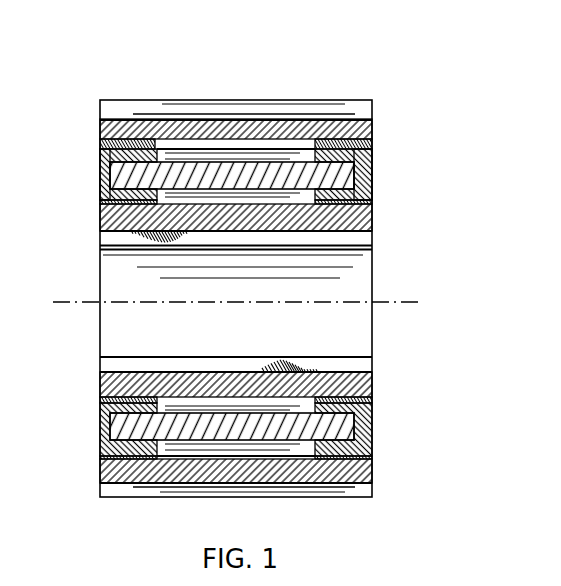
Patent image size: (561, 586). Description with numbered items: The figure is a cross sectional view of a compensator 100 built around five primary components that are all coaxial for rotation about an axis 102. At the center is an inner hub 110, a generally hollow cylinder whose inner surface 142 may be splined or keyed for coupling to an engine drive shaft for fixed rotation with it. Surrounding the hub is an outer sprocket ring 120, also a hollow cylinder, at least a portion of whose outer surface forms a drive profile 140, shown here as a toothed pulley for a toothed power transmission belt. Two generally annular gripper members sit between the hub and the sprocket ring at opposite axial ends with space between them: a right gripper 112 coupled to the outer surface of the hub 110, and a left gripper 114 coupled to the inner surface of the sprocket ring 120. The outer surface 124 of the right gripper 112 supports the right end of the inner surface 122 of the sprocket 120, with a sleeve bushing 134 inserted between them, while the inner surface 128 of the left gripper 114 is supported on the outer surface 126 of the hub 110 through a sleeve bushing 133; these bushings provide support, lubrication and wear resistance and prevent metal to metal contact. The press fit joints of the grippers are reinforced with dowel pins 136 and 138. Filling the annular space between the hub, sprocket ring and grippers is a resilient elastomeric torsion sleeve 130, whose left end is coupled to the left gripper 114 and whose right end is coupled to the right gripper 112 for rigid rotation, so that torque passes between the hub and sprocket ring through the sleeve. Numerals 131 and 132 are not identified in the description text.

The compensator 100 is at (370, 57).
The axis 102 is at (390, 300).
The inner hub 110 is at (372, 228).
The right gripper 112 is at (372, 147).
The left gripper 114 is at (96, 165).
The outer sprocket ring 120 is at (271, 104).
The inner surface of sprocket 122 is at (372, 135).
The outer surface of right gripper 124 is at (409, 174).
The outer surface of hub 126 is at (105, 398).
The inner surface of left gripper 128 is at (100, 418).
The torsion sleeve 130 is at (325, 180).
The side wall 131 is at (100, 182).
The side wall 132 is at (372, 173).
The sleeve bushing 133 is at (100, 401).
The sleeve bushing 134 is at (372, 433).
The dowel pin 136 is at (100, 143).
The dowel pin 138 is at (372, 391).
The drive profile 140 is at (147, 108).
The inner surface of hub 142 is at (128, 242).